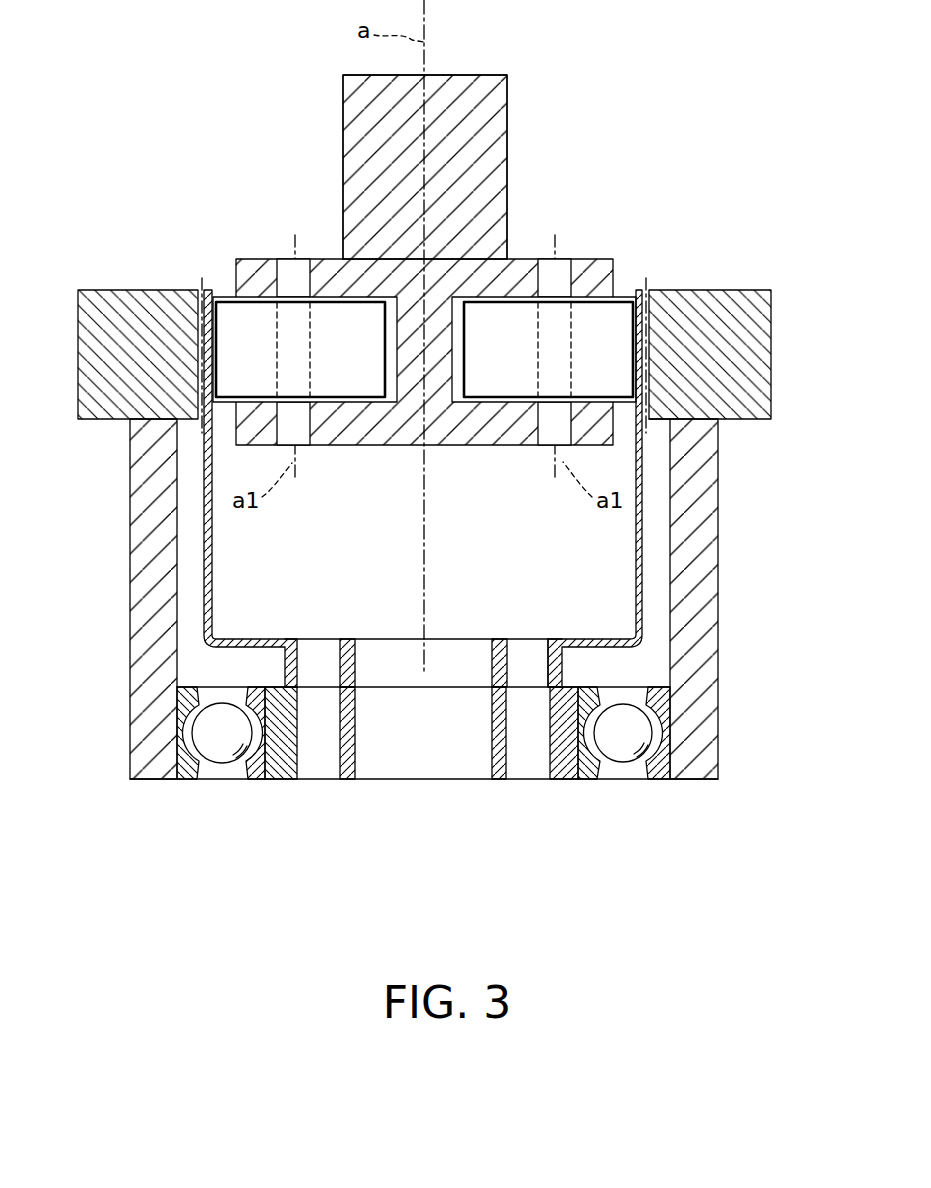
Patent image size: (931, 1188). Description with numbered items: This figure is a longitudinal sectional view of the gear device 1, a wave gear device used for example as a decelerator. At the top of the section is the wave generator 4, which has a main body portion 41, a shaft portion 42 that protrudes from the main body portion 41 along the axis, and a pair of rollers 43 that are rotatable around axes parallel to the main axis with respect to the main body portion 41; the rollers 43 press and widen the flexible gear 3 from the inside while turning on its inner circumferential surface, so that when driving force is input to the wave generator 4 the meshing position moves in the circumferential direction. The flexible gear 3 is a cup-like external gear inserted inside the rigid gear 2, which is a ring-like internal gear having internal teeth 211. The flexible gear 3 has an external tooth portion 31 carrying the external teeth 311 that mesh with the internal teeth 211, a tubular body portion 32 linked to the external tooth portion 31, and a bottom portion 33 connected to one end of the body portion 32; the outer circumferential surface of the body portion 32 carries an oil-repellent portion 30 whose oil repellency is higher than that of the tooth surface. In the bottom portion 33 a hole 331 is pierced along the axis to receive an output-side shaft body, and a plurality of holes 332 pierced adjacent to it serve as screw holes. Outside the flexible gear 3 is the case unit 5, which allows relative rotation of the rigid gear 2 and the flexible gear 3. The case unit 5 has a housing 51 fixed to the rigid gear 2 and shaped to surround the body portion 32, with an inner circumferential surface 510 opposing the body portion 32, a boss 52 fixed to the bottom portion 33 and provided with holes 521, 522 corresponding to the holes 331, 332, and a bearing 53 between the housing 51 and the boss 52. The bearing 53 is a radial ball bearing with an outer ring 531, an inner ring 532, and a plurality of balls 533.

The gear device 1 is at (763, 652).
The rigid gear 2 is at (786, 352).
The internal teeth 211 is at (633, 412).
The flexible gear 3 is at (659, 585).
The oil-repellent portion 30 is at (209, 563).
The external tooth portion 31 is at (203, 360).
The external teeth 311 is at (655, 307).
The body portion 32 is at (209, 537).
The bottom portion 33 is at (238, 647).
The hole 331 is at (492, 667).
The holes 332 is at (548, 667).
The wave generator 4 is at (520, 120).
The main body portion 41 is at (463, 447).
The shaft portion 42 is at (343, 150).
The rollers 43 is at (357, 402).
The case unit 5 is at (728, 692).
The housing 51 is at (718, 732).
The inner circumferential surface 510 is at (668, 512).
The boss 52 is at (565, 780).
The hole 521 is at (490, 747).
The holes 522 is at (548, 748).
The bearing 53 is at (730, 843).
The outer ring 531 is at (652, 780).
The inner ring 532 is at (601, 780).
The balls 533 is at (623, 763).